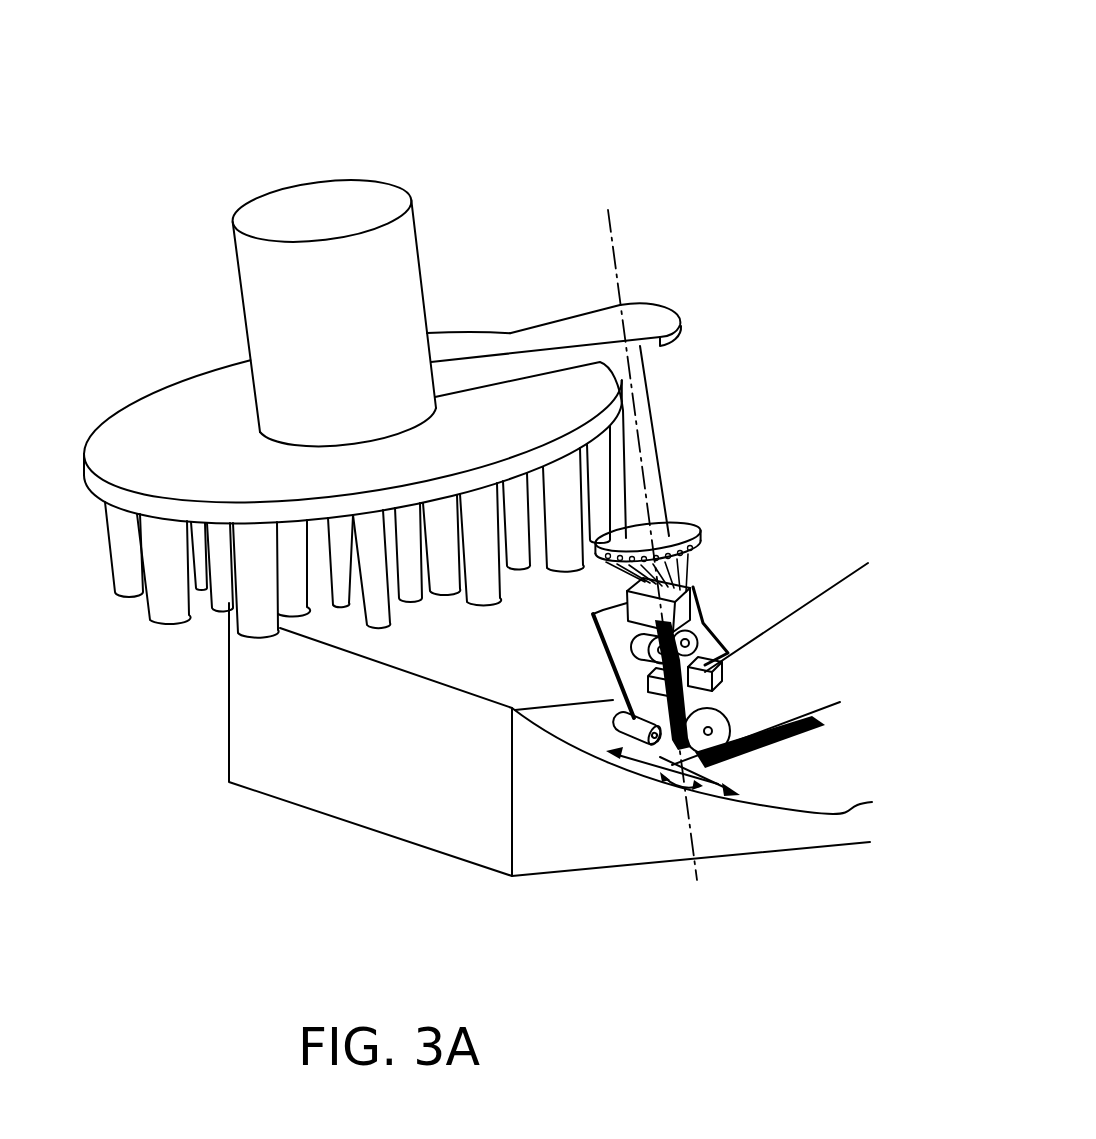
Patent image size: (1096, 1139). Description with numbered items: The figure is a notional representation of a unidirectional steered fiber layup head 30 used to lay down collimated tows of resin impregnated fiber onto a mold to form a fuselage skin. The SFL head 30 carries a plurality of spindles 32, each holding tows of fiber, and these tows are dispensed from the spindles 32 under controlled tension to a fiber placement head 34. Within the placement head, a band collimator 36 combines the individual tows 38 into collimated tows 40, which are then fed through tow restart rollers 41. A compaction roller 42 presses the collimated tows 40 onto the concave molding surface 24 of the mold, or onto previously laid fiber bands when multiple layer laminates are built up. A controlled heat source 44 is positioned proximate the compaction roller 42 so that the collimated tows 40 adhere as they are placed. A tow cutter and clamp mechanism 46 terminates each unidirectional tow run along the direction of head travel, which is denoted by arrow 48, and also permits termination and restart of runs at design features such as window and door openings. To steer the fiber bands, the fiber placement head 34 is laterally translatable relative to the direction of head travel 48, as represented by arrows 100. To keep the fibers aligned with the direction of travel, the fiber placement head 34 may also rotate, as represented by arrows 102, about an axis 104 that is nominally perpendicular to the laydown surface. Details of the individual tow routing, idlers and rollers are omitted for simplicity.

The unidirectional SFL head 30 is at (475, 121).
The axis 104 is at (611, 257).
The concave molding surface 24 is at (897, 652).
The spindles 32 is at (247, 580).
The individual tows 38 is at (702, 572).
The band collimator 36 is at (700, 613).
The fiber placement head 34 is at (598, 614).
The tow restart rollers 41 is at (637, 650).
The collimated tows 40 is at (645, 684).
The controlled heat source 44 is at (618, 705).
The tow cutter and clamp mechanism 46 is at (716, 676).
The compaction roller 42 is at (725, 728).
The direction of head travel 48 is at (803, 740).
The arrows 100 is at (715, 790).
The arrows 102 is at (663, 775).